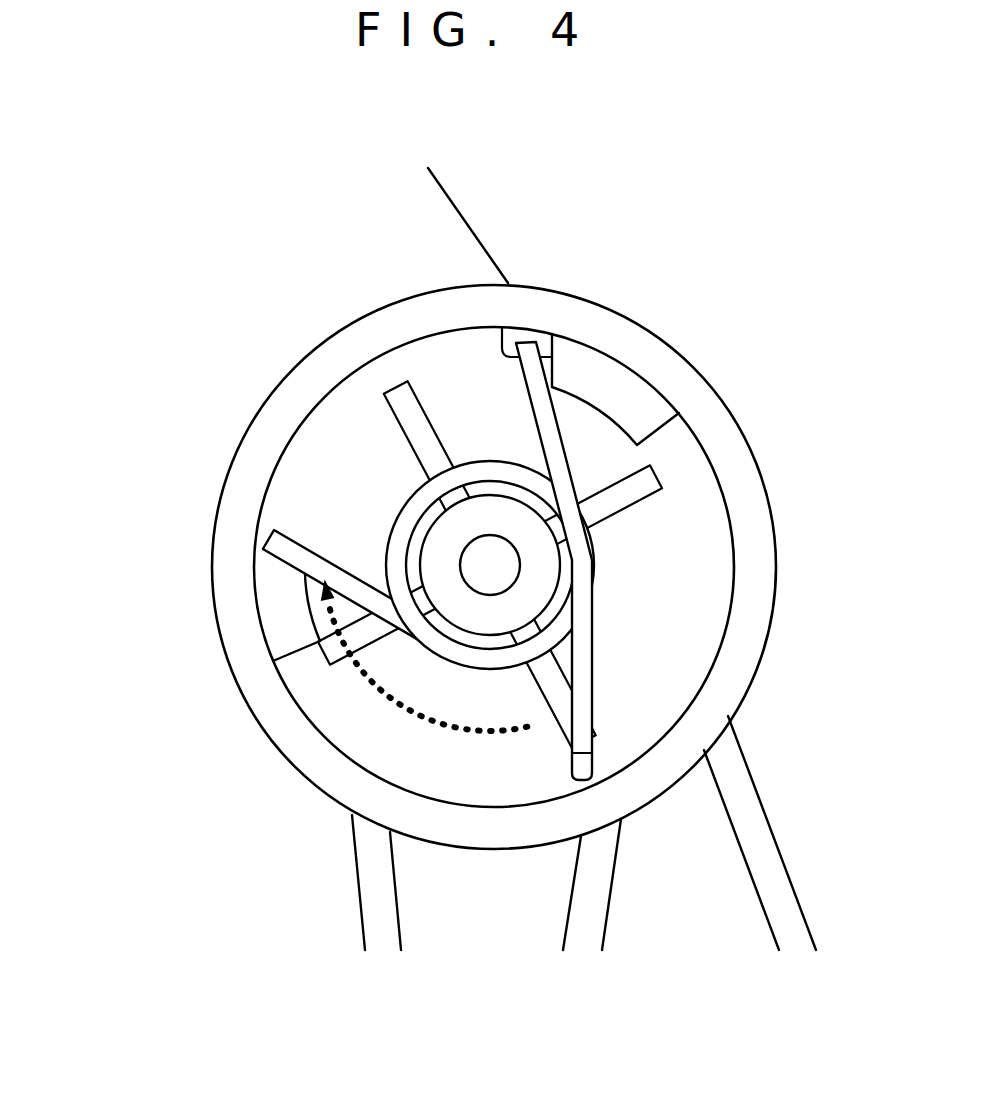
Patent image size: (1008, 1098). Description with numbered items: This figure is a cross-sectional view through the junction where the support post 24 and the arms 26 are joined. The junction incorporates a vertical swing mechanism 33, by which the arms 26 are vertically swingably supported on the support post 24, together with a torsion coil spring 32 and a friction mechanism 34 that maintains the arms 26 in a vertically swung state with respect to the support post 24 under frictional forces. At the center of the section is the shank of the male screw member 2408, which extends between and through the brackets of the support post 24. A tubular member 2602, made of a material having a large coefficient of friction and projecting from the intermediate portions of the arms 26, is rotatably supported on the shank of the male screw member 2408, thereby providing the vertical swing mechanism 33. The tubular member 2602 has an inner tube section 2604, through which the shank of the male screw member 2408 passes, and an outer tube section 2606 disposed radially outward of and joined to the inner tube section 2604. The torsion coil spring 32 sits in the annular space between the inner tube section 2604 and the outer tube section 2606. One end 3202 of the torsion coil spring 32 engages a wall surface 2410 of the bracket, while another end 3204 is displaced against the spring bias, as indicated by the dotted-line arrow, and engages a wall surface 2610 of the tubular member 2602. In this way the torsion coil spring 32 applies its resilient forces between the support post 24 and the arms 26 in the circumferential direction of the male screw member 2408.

The support post 24 is at (357, 884).
The arms 26 is at (444, 190).
The torsion coil spring 32 is at (460, 667).
The vertical swing mechanism 33 is at (473, 530).
The friction mechanism 34 is at (508, 530).
The male screw member 2408 is at (518, 580).
The wall surface 2410 is at (547, 343).
The tubular member 2602 is at (702, 349).
The inner tube section 2604 is at (428, 513).
The outer tube section 2606 is at (775, 512).
The wall surface 2610 is at (317, 548).
The end 3202 is at (503, 325).
The another end 3204 is at (413, 507).